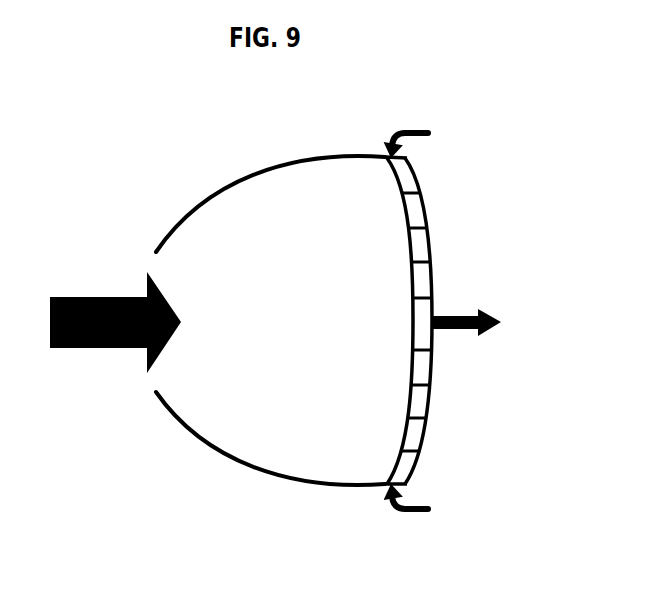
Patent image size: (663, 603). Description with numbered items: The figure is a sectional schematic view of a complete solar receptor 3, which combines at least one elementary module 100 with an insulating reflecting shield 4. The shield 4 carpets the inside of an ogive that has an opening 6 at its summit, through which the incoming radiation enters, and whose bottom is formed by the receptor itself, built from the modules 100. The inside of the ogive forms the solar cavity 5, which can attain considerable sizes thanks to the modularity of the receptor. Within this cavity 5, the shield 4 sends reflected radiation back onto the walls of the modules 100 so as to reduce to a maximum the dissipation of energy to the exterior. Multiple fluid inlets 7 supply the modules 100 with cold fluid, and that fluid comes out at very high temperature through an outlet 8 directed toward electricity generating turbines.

The solar receptor 3 is at (92, 172).
The insulating reflecting shield 4 is at (236, 170).
The solar cavity 5 is at (258, 382).
The opening 6 is at (138, 388).
The fluid inlets 7 is at (421, 110).
The outlet 8 is at (461, 350).
The elementary module 100 is at (428, 164).